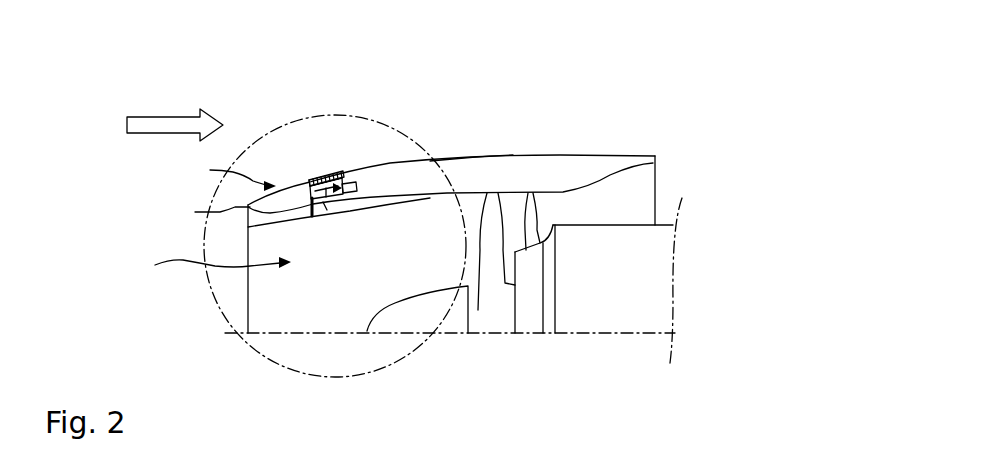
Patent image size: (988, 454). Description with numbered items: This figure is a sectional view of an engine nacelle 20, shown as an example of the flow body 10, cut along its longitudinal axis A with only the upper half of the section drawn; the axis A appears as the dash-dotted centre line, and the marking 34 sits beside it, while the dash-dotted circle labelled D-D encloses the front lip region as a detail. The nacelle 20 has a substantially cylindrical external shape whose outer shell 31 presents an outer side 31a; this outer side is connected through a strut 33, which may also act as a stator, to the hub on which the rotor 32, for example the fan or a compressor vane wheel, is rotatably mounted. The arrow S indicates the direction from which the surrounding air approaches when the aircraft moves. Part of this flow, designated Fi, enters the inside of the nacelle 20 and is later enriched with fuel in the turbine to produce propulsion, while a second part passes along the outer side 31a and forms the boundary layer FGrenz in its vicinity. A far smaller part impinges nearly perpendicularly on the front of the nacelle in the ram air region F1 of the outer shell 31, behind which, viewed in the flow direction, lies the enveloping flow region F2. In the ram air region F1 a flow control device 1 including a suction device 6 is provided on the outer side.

The flow body 10 is at (460, 168).
The flow control device 1 is at (313, 177).
The suction device 6 is at (313, 182).
The engine nacelle 20 is at (607, 155).
The outer shell 31 is at (413, 170).
The outer side 31a is at (475, 153).
The rotor 32 is at (492, 245).
The strut 33 is at (532, 235).
The engine axis 34 is at (457, 342).
The flow direction S is at (175, 110).
The detail section circle D-D is at (335, 231).
The ram air region F1 is at (204, 208).
The enveloping flow region F2 is at (318, 180).
The boundary layer FGrenz is at (204, 171).
The inner flow part Fi is at (202, 272).
The longitudinal axis A is at (208, 356).